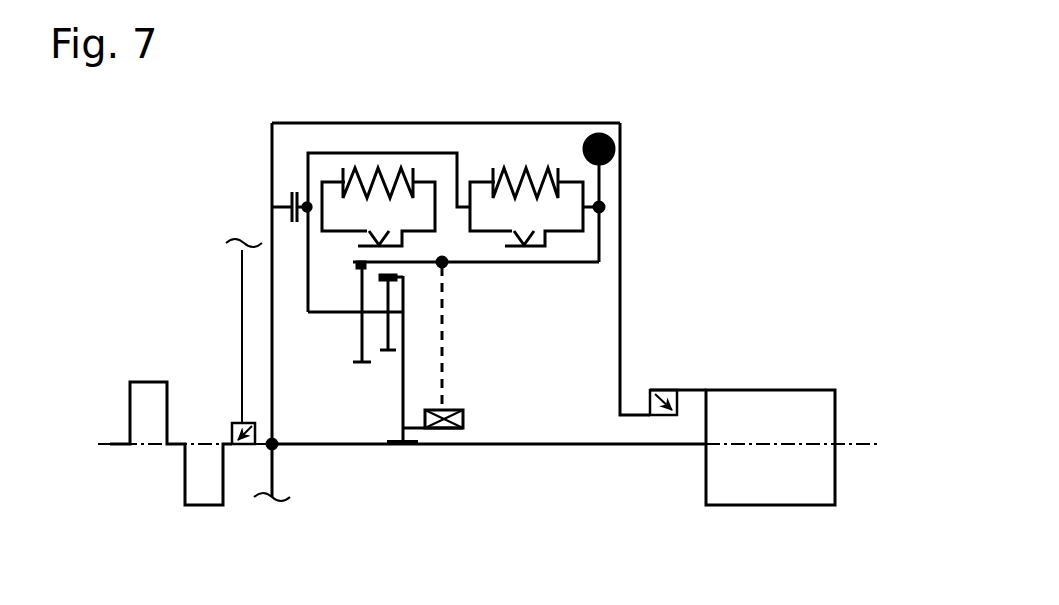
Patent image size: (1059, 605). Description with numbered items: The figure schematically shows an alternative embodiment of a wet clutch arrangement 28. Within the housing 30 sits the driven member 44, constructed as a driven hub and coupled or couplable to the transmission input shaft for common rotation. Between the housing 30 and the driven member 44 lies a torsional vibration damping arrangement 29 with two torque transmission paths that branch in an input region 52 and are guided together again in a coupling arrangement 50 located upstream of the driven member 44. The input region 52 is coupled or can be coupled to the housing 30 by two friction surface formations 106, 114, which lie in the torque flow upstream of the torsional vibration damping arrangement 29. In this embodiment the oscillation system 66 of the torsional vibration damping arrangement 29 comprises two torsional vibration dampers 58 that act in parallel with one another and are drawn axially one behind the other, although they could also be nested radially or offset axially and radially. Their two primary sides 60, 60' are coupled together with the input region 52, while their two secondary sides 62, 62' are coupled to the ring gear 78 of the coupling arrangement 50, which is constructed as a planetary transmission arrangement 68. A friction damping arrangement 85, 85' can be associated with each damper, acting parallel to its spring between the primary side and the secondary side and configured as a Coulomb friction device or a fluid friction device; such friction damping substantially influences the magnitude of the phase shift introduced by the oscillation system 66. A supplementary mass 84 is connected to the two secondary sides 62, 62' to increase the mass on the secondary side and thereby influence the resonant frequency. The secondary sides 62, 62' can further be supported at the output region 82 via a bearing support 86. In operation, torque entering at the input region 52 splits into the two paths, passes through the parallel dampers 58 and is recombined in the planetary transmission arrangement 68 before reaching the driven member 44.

The wet clutch arrangement 28 is at (706, 61).
The torsional vibration damping arrangement 29 is at (604, 82).
The housing 30 is at (622, 228).
The driven member 44 is at (412, 447).
The coupling arrangement 50 is at (343, 341).
The input region 52 is at (279, 121).
The torsional vibration damper 58 is at (375, 168).
The primary side 60 is at (372, 128).
The primary side 60' is at (520, 137).
The secondary side 62 is at (396, 144).
The secondary side 62' is at (605, 210).
The oscillation system 66 is at (320, 142).
The planetary transmission arrangement 68 is at (420, 315).
The ring gear 78 is at (352, 260).
The output region 82 is at (390, 399).
The supplementary mass 84 is at (612, 145).
The friction damping arrangement 85 is at (288, 224).
The friction damping arrangement 85' is at (602, 262).
The bearing support 86 is at (465, 420).
The friction surface formation 106 is at (289, 193).
The friction surface formation 114 is at (302, 206).